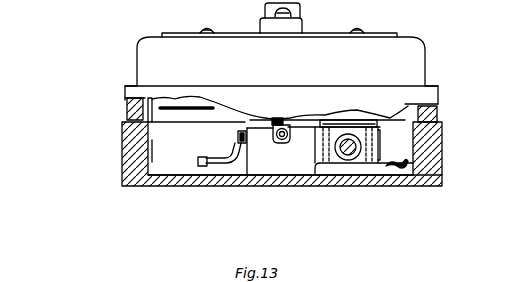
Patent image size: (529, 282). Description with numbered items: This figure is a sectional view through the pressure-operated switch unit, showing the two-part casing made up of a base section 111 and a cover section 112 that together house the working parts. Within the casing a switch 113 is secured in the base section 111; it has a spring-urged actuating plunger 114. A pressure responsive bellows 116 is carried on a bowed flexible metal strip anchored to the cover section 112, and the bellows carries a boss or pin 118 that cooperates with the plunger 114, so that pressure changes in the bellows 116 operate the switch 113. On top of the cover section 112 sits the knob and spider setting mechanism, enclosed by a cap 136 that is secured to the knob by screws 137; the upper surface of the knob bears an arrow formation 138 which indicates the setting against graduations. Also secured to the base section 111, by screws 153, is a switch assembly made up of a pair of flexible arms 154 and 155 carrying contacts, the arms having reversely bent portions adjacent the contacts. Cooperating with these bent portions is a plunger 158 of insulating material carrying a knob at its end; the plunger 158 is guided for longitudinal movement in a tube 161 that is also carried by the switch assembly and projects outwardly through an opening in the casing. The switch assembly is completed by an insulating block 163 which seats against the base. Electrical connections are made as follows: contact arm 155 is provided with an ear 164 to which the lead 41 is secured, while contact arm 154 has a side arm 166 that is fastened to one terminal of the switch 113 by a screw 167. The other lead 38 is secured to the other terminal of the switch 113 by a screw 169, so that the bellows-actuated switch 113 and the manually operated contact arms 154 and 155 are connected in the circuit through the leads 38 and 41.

The lead 38 is at (204, 168).
The lead 41 is at (410, 163).
The base section 111 is at (121, 172).
The cover section 112 is at (418, 62).
The switch 113 is at (258, 182).
The actuating plunger 114 is at (290, 122).
The pressure responsive bellows 116 is at (187, 113).
The boss or pin 118 is at (277, 118).
The cap 136 is at (300, 10).
The screws 137 is at (265, 10).
The arrow formation 138 is at (282, 29).
The screws 153 is at (330, 120).
The flexible arm 154 is at (383, 136).
The flexible arm 155 is at (313, 167).
The plunger 158 is at (340, 158).
The tube 161 is at (346, 156).
The insulating block 163 is at (356, 172).
The ear 164 is at (422, 200).
The side arm 166 is at (302, 133).
The screw 167 is at (274, 137).
The screw 169 is at (239, 136).